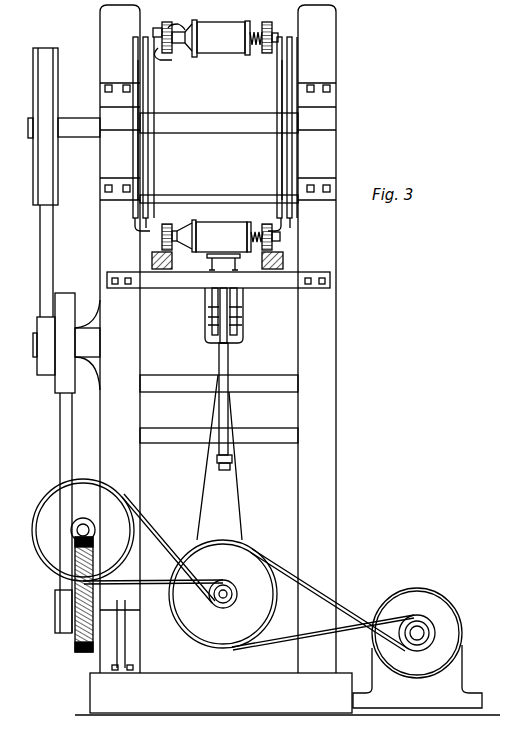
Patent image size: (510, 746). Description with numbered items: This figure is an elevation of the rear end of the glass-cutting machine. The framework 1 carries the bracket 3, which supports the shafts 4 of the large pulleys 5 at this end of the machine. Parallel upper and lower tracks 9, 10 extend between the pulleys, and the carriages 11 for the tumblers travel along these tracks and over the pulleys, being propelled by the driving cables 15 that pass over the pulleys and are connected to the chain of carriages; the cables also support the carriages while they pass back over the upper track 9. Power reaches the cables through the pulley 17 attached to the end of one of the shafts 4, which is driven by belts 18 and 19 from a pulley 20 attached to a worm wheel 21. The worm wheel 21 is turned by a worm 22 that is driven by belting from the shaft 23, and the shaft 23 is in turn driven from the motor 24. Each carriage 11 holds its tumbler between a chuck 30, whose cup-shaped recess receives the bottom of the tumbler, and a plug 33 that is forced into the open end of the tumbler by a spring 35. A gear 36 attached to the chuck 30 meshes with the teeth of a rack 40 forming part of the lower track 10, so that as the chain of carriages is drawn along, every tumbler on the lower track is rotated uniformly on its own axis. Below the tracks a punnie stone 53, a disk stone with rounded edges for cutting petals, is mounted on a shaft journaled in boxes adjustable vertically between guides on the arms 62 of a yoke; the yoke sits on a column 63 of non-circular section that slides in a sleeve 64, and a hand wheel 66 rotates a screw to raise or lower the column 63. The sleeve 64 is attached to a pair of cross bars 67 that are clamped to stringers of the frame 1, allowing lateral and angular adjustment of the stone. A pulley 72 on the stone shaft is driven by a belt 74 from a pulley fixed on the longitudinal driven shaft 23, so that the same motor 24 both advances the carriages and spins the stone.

The framework 1 is at (336, 377).
The bracket 3 is at (218, 123).
The shaft 4 is at (214, 120).
The large pulley 5 is at (280, 90).
The upper track 9 is at (170, 60).
The lower track 10 is at (285, 252).
The carriage 11 is at (196, 18).
The driving cable 15 is at (283, 148).
The pulley 17 is at (58, 68).
The belt 18 is at (40, 257).
The belt 19 is at (60, 432).
The pulley 20 is at (57, 630).
The worm wheel 21 is at (76, 650).
The worm 22 is at (90, 530).
The shaft 23 is at (226, 592).
The motor 24 is at (425, 592).
The chuck 30 is at (192, 218).
The plug 33 is at (252, 52).
The spring 35 is at (260, 220).
The gear 36 is at (153, 26).
The rack 40 is at (214, 260).
The punnie stone 53 is at (238, 327).
The arm 62 is at (208, 338).
The column 63 is at (229, 352).
The sleeve 64 is at (228, 415).
The hand wheel 66 is at (224, 472).
The cross bar 67 is at (157, 393).
The pulley 72 is at (212, 305).
The belt 74 is at (203, 483).